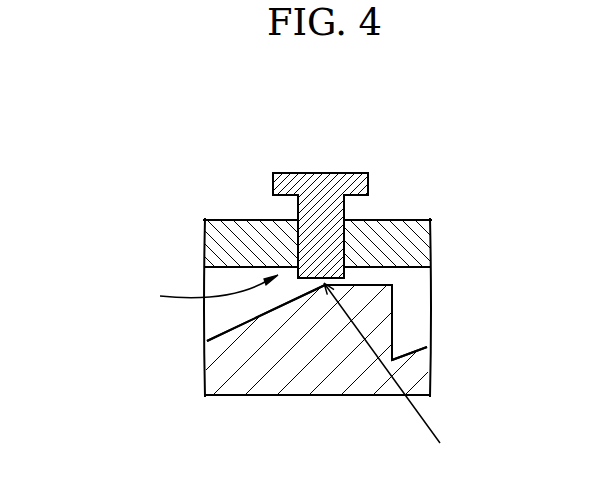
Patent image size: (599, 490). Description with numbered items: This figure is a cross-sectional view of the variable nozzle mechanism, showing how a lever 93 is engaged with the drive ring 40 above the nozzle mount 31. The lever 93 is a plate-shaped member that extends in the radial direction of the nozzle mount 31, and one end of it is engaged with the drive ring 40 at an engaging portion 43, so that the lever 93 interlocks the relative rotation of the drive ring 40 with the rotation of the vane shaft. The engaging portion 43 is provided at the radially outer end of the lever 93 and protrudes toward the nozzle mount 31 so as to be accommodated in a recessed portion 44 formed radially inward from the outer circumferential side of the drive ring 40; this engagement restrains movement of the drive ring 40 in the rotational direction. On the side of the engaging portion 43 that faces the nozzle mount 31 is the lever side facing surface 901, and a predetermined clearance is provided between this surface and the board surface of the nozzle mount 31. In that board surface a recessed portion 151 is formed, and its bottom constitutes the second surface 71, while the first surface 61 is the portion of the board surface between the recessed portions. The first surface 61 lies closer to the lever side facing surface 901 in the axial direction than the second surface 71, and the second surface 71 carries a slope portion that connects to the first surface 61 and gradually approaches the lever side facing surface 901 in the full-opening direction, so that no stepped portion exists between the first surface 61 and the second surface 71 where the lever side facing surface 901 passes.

The lever 93 is at (310, 173).
The recessed portion 44 is at (350, 221).
The drive ring 40 is at (405, 221).
The engaging portion 43 is at (205, 294).
The second surface 71 is at (212, 327).
The first surface 61 is at (393, 285).
The recessed portion 151 is at (424, 347).
The nozzle mount 31 is at (420, 370).
The lever side facing surface 901 is at (402, 375).